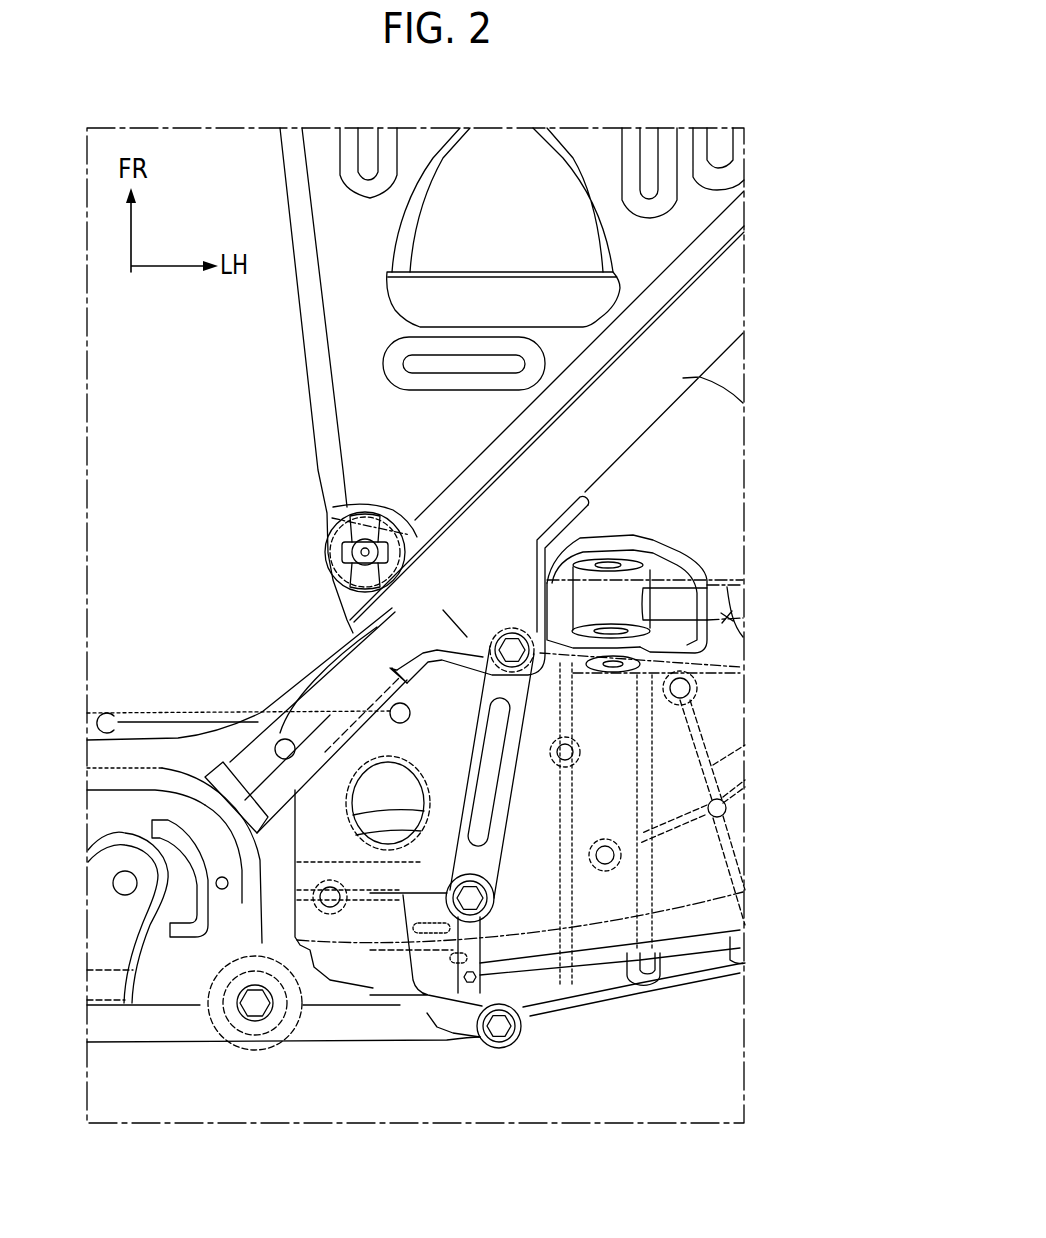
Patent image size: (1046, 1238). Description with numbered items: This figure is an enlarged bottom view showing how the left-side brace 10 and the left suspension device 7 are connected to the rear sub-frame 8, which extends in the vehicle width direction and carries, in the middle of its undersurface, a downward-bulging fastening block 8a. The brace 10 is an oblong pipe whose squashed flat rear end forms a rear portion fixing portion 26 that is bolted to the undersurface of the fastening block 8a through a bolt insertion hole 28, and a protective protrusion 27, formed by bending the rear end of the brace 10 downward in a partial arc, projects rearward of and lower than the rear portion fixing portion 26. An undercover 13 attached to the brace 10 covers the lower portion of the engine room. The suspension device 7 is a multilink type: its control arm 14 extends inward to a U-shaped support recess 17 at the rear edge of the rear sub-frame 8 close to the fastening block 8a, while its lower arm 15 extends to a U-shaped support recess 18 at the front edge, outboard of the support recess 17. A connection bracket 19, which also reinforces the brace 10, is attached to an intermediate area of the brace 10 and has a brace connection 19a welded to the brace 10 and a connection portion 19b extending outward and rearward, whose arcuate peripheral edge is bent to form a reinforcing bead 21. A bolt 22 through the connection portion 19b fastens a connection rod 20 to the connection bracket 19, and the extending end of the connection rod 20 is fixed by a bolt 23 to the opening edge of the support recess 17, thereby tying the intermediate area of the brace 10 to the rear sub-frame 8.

The suspension device 7 is at (728, 572).
The rear sub-frame 8 is at (582, 1016).
The fastening block 8a is at (327, 1032).
The brace 10 is at (683, 378).
The undercover 13 is at (690, 180).
The control arm 14 is at (720, 983).
The lower arm 15 is at (730, 620).
The support recess 17 is at (453, 1033).
The support recess 18 is at (635, 535).
The connection bracket 19 is at (538, 532).
The brace connection 19a is at (420, 633).
The connection portion 19b is at (467, 637).
The connection rod 20 is at (507, 817).
The reinforcing bead 21 is at (545, 668).
The bolt 22 is at (510, 647).
The bolt 23 is at (485, 905).
The rear portion fixing portion 26 is at (278, 735).
The protective protrusion 27 is at (222, 775).
The bolt insertion hole 28 is at (272, 758).